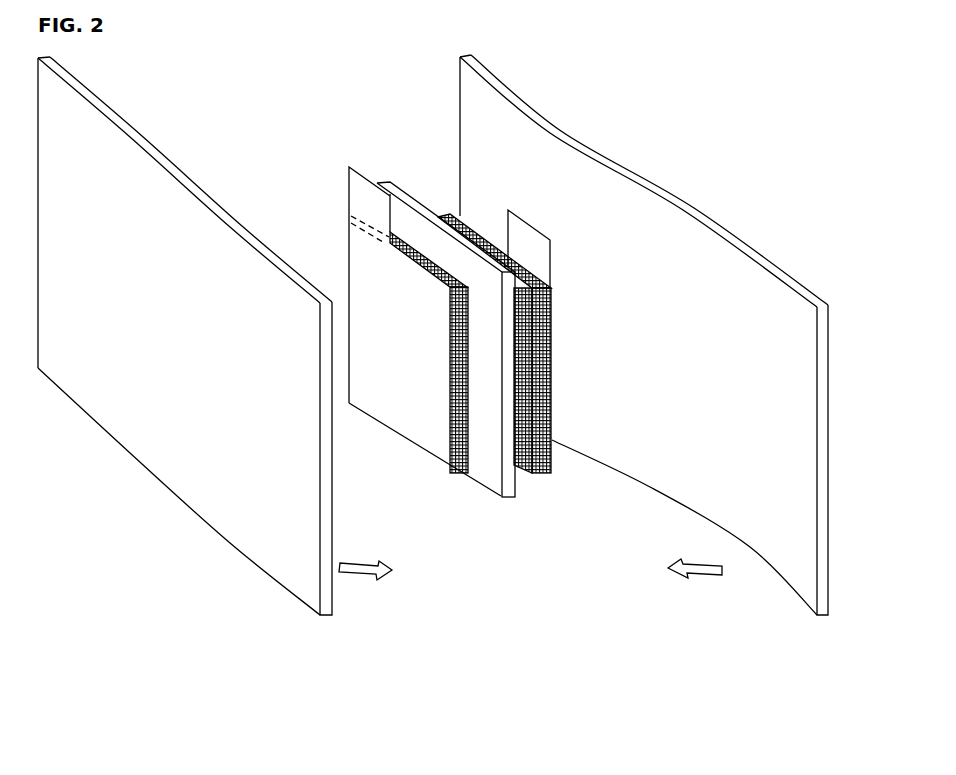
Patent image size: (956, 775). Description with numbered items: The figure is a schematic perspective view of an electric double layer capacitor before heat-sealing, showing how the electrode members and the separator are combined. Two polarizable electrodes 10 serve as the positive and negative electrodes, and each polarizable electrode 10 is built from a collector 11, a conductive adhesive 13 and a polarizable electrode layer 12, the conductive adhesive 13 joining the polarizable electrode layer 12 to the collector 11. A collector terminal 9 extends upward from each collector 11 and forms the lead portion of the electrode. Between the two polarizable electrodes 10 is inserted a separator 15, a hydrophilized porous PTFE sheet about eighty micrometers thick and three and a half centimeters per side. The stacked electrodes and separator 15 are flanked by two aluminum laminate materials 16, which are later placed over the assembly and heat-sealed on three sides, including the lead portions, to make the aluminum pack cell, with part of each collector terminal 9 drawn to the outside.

The collector terminal 9 is at (365, 197).
The polarizable electrode 10 is at (488, 585).
The collector 11 is at (435, 447).
The polarizable electrode layer 12 is at (462, 475).
The conductive adhesive 13 is at (452, 475).
The separator 15 is at (493, 483).
The aluminum laminate material 16 is at (323, 613).